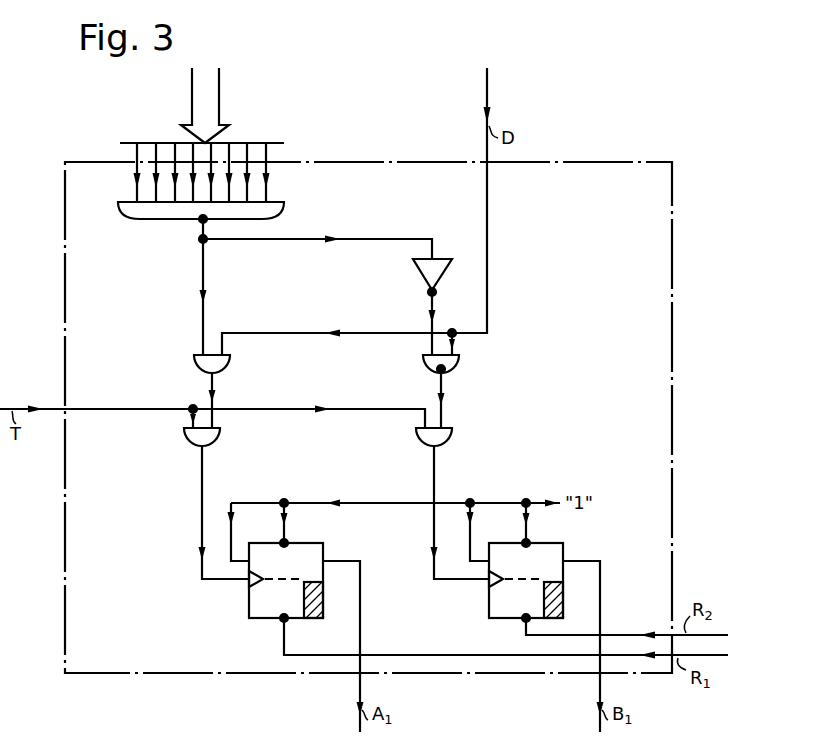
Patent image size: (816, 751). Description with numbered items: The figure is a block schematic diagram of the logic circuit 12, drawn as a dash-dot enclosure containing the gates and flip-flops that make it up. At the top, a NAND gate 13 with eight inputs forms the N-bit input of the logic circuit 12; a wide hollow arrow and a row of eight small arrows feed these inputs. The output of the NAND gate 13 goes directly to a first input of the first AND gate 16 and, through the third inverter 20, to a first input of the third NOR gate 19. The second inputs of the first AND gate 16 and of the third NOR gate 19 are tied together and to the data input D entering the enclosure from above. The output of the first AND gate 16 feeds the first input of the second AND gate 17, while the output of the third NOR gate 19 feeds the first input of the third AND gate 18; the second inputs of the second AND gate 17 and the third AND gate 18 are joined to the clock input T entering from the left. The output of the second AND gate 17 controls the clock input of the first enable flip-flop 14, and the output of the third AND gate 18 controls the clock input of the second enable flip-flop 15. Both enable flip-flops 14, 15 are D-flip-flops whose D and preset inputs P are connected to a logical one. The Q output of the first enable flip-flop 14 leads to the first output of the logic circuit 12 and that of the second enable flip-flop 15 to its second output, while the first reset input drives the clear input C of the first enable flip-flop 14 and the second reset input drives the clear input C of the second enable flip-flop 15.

The logic circuit 12 is at (617, 162).
The NAND gate 13 is at (285, 208).
The first enable flip-flop 14 is at (323, 543).
The second enable flip-flop 15 is at (563, 543).
The first AND gate 16 is at (229, 361).
The second AND gate 17 is at (219, 434).
The third AND gate 18 is at (451, 434).
The third NOR gate 19 is at (458, 361).
The third inverter 20 is at (444, 272).